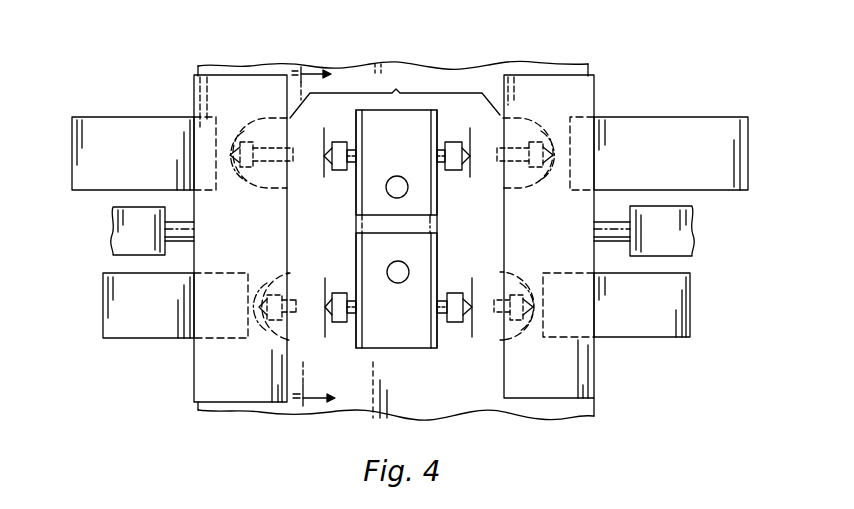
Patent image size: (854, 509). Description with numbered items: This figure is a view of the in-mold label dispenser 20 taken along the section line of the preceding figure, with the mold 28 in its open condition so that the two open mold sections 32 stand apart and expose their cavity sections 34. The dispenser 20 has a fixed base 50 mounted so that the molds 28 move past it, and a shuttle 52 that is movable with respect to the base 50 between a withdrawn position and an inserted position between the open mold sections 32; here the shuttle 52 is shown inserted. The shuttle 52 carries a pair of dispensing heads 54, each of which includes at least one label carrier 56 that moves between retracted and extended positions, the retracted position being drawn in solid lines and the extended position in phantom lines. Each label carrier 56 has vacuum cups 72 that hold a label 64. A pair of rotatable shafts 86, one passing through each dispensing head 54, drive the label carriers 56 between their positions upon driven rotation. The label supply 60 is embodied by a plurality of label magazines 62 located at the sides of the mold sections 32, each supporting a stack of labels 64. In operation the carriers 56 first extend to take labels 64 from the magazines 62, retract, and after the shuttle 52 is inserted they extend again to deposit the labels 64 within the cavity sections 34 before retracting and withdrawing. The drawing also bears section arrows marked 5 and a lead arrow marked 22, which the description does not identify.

The section line 5- 5 is at (322, 238).
The in-mold label dispenser 20 is at (447, 66).
The frame 22 is at (600, 80).
The mold 28 is at (395, 93).
The mold sections 32 is at (194, 88).
The cavity sections 34 is at (284, 121).
The base 50 is at (481, 419).
The shuttle 52 is at (356, 225).
The dispensing heads 54 is at (433, 195).
The label carrier 56 is at (279, 173).
The label supply 60 is at (103, 340).
The label magazines 62 is at (87, 191).
The labels 64 is at (231, 150).
The vacuum cups 72 is at (468, 153).
The rotatable shafts 86 is at (396, 176).